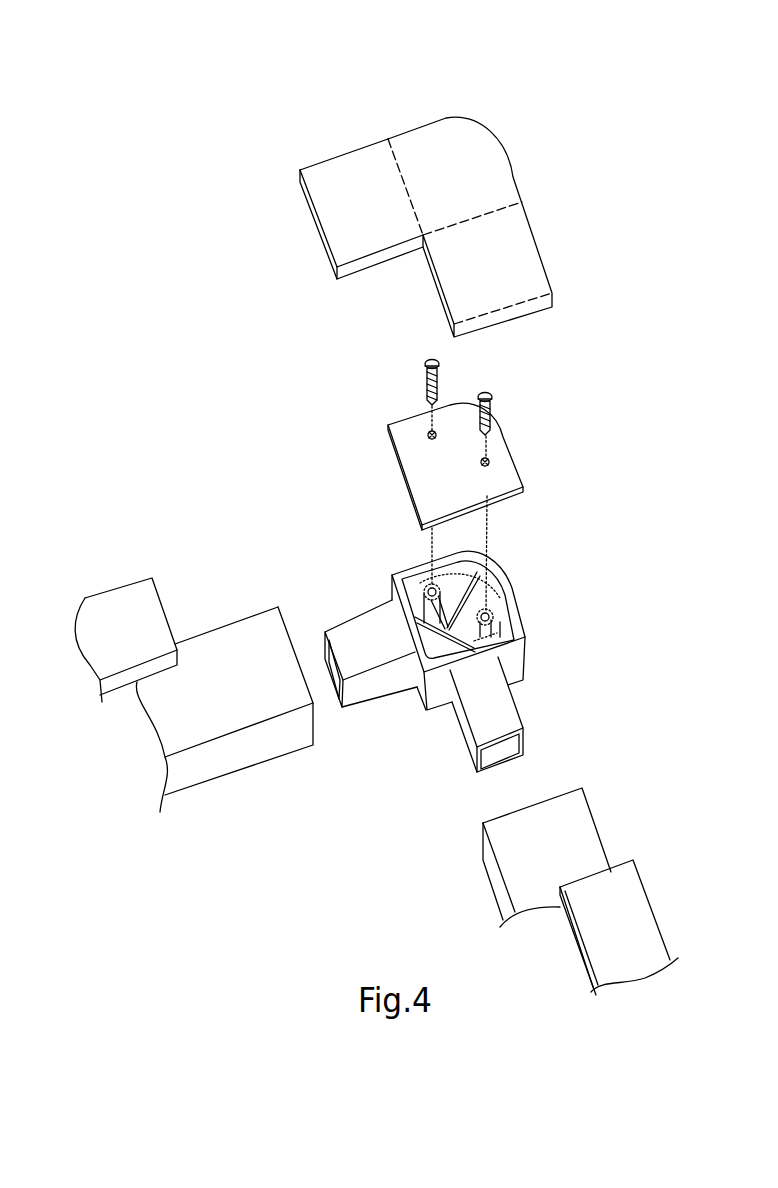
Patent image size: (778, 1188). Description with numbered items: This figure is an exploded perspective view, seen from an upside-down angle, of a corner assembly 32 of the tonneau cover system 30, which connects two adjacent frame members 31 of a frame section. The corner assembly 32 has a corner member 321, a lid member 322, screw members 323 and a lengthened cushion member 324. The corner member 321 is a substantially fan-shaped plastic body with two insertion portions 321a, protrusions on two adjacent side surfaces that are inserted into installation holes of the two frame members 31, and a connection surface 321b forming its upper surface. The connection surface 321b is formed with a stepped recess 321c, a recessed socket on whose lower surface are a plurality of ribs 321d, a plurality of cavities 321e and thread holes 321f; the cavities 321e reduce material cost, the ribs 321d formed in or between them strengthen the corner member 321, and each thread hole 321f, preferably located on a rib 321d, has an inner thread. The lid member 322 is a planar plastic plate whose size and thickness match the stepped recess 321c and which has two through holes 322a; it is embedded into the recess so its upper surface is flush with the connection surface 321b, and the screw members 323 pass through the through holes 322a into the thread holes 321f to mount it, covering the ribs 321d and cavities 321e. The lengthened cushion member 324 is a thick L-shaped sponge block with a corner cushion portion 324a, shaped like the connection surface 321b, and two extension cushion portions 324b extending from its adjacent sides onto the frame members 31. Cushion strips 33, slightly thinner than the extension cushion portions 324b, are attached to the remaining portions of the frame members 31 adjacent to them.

The tonneau cover system 30 is at (268, 502).
The frame member 31 is at (240, 699).
The corner assembly 32 is at (385, 520).
The cushion strip 33 is at (145, 588).
The corner member 321 is at (390, 598).
The insertion portion 321a is at (368, 688).
The connection surface 321b is at (397, 572).
The stepped recess 321c is at (505, 590).
The rib 321d is at (495, 562).
The cavity 321e is at (502, 640).
The thread hole 321f is at (495, 615).
The lid member 322 is at (513, 485).
The through hole 322a is at (490, 458).
The screw member 323 is at (490, 396).
The lengthened cushion member 324 is at (353, 80).
The corner cushion portion 324a is at (421, 150).
The extension cushion portion 324b is at (343, 170).